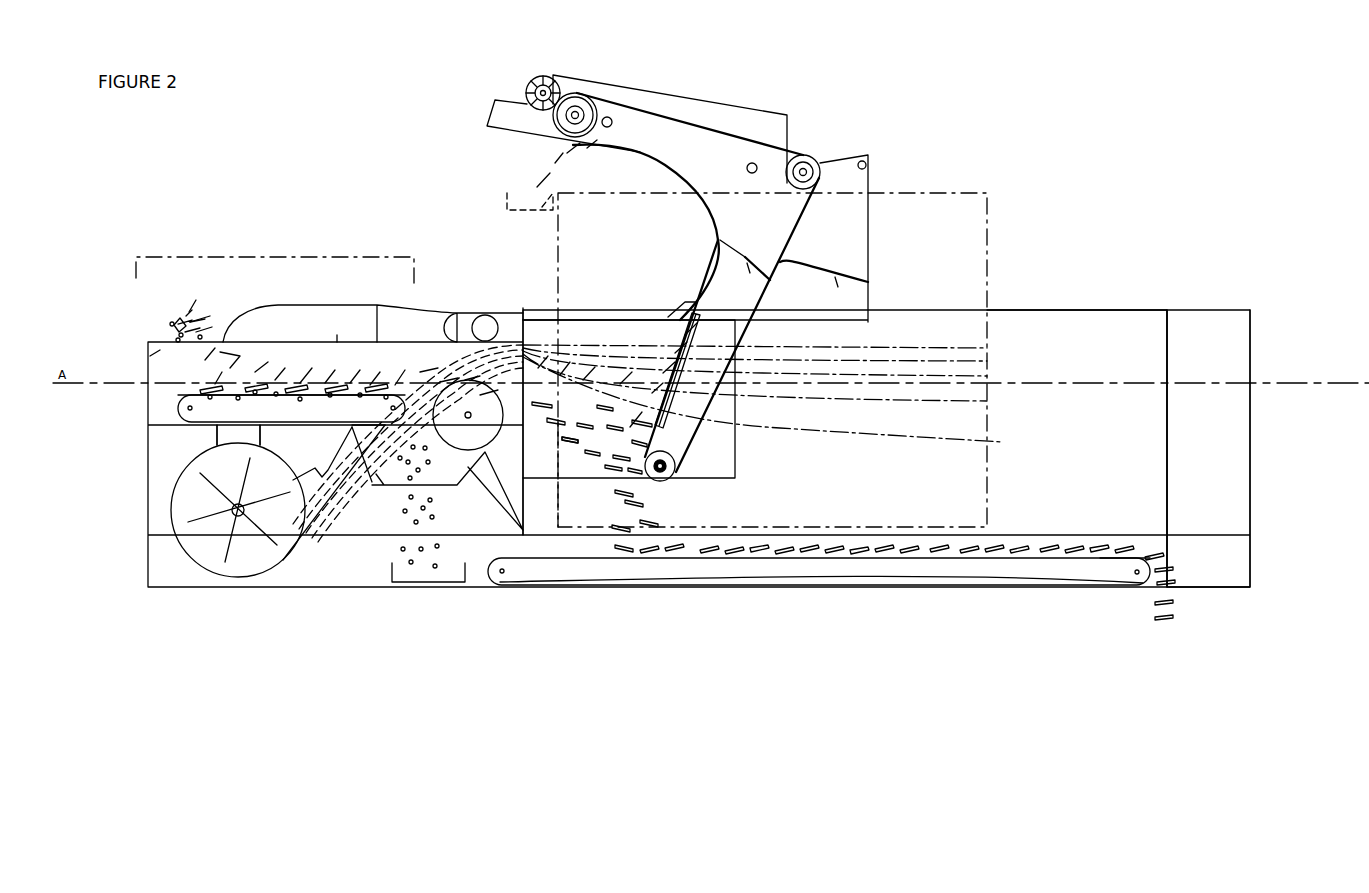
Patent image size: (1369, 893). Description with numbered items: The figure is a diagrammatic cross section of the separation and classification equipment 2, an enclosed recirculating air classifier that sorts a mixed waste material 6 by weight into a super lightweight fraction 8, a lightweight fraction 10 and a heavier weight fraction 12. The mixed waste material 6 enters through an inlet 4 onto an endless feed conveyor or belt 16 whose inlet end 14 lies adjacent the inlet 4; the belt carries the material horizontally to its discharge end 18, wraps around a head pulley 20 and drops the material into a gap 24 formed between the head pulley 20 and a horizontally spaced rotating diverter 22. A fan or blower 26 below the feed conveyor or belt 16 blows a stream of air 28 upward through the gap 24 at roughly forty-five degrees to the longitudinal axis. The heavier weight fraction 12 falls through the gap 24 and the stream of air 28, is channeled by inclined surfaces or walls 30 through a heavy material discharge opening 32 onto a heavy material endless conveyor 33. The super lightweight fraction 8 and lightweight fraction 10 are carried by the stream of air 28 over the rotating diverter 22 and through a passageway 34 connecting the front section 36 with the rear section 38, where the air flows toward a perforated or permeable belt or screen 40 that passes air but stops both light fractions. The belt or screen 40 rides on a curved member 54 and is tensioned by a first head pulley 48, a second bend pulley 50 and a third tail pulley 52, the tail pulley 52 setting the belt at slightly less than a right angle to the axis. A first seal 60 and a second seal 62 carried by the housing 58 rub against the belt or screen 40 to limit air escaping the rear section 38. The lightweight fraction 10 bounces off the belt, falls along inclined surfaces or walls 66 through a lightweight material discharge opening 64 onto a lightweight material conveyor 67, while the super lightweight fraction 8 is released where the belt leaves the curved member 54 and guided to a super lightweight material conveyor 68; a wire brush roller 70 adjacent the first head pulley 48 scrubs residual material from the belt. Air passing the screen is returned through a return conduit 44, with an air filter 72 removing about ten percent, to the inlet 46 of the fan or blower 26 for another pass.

The separation and classification equipment 2 is at (1002, 73).
The inlet 4 is at (198, 302).
The mixed waste material 6 is at (168, 324).
The super lightweight fraction 8 is at (545, 160).
The lightweight fraction 10 is at (858, 547).
The heavier weight fraction 12 is at (410, 523).
The inlet end 14 is at (178, 408).
The feed conveyor or belt 16 is at (210, 442).
The discharge end 18 is at (370, 405).
The head pulley 20 is at (402, 425).
The rotating diverter 22 is at (492, 345).
The gap 24 is at (455, 352).
The fan or blower 26 is at (258, 563).
The stream of air 28 is at (350, 490).
The inclined surfaces or walls 30 is at (530, 455).
The heavy material discharge opening 32 is at (455, 472).
The heavy material endless conveyor 33 is at (428, 590).
The passageway 34 is at (530, 330).
The front section 36 is at (278, 257).
The rear section 38 is at (988, 308).
The perforated or permeable belt or screen 40 is at (720, 128).
The return conduit 44 is at (312, 302).
The inlet of the fan or blower 46 is at (212, 445).
The first head pulley 48 is at (578, 93).
The second bend pulley 50 is at (820, 195).
The third tail pulley 52 is at (678, 468).
The curved member 54 is at (695, 272).
The housing 58 is at (1090, 310).
The first seal 60 is at (752, 247).
The second seal 62 is at (872, 185).
The lightweight material discharge opening 64 is at (593, 457).
The inclined surfaces or walls 66 is at (556, 455).
The lightweight material conveyor 67 is at (1092, 586).
The super lightweight material conveyor 68 is at (505, 208).
The wire brush roller 70 is at (536, 78).
The air filter 72 is at (1250, 310).